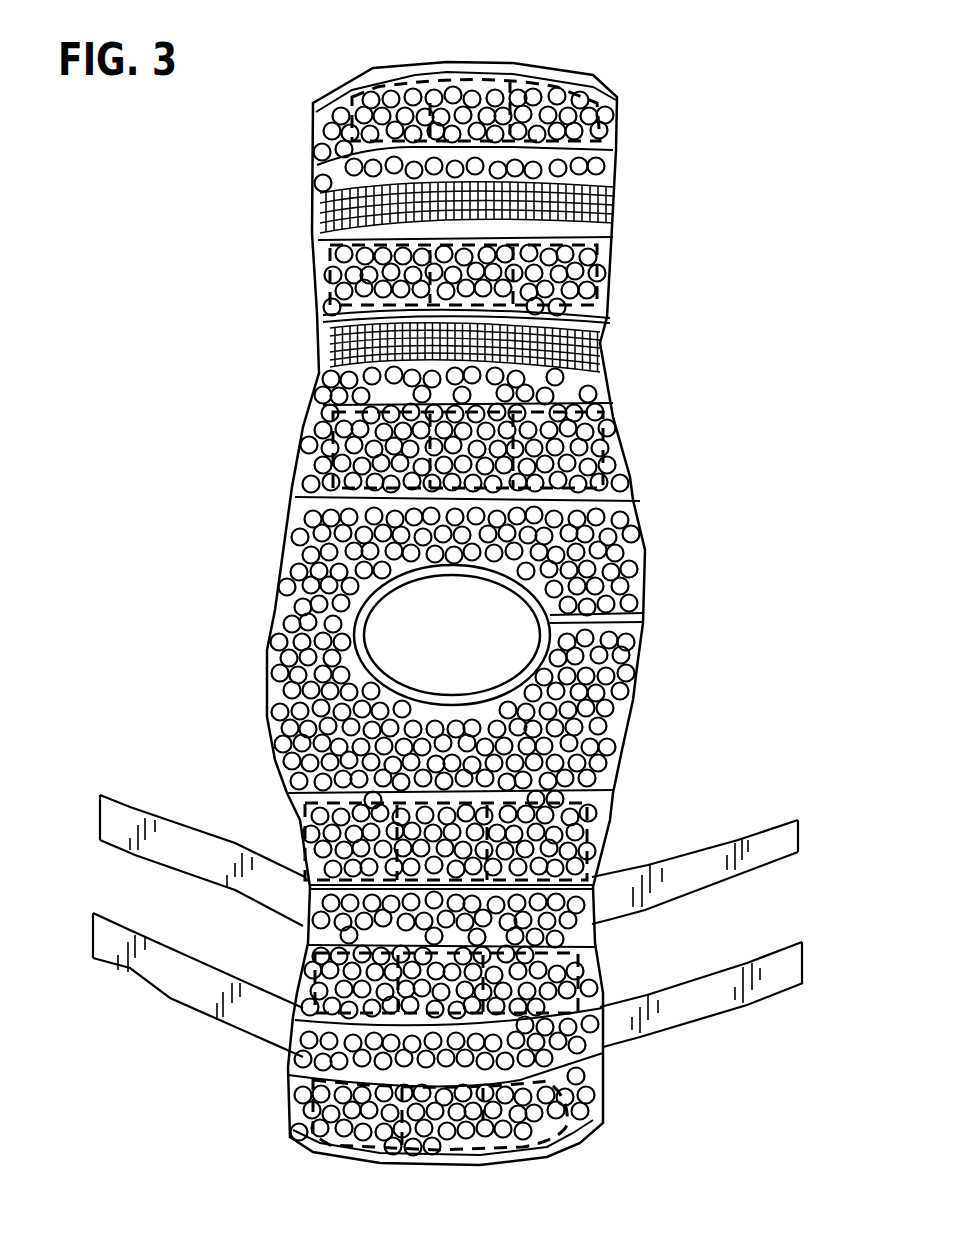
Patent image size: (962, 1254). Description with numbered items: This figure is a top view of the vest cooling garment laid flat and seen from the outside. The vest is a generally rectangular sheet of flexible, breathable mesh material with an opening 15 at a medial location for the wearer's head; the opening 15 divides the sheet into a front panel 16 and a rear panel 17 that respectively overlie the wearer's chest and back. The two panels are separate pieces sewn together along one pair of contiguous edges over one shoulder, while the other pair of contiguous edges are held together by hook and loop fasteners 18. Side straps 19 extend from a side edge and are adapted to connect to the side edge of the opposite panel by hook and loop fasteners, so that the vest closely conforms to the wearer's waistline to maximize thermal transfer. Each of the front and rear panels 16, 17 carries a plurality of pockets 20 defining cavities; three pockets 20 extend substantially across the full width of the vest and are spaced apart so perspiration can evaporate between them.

The opening 15 is at (377, 607).
The front panel 16 is at (310, 232).
The rear panel 17 is at (267, 757).
The hook and loop fasteners 18 is at (623, 617).
The side straps 19 is at (105, 812).
The pockets 20 is at (605, 95).